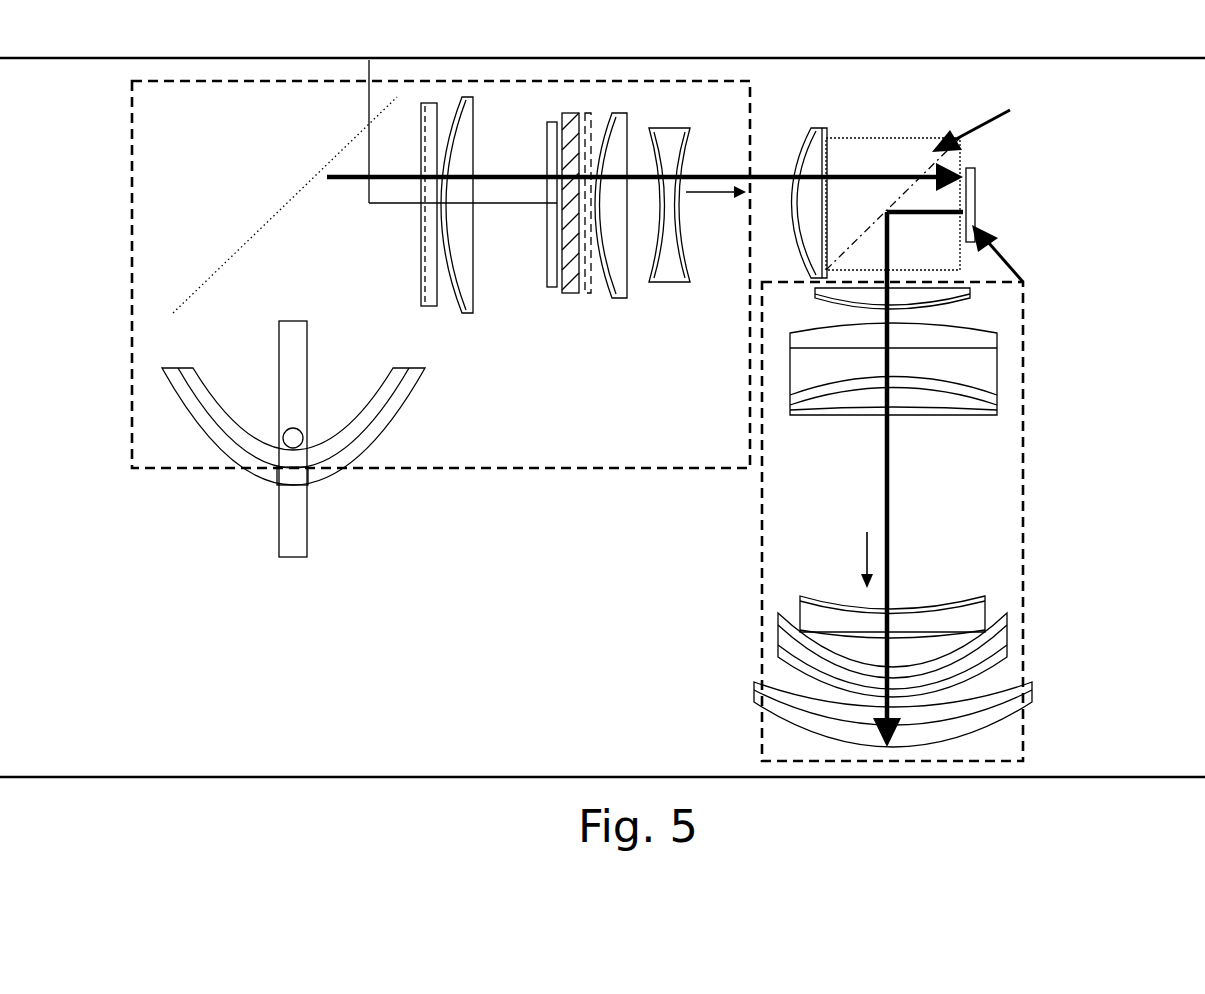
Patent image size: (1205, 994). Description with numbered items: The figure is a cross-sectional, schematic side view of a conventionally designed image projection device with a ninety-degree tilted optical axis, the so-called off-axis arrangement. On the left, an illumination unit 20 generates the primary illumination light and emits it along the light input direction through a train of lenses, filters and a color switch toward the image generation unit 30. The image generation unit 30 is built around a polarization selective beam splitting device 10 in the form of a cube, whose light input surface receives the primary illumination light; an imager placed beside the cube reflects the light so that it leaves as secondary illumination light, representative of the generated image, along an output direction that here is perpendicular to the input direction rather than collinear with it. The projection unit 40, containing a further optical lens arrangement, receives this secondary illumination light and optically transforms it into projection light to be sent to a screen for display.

The illumination unit 20 is at (547, 278).
The polarization selective beam splitting device 10 is at (989, 199).
The image generation unit 30 is at (989, 175).
The projection unit 40 is at (922, 486).